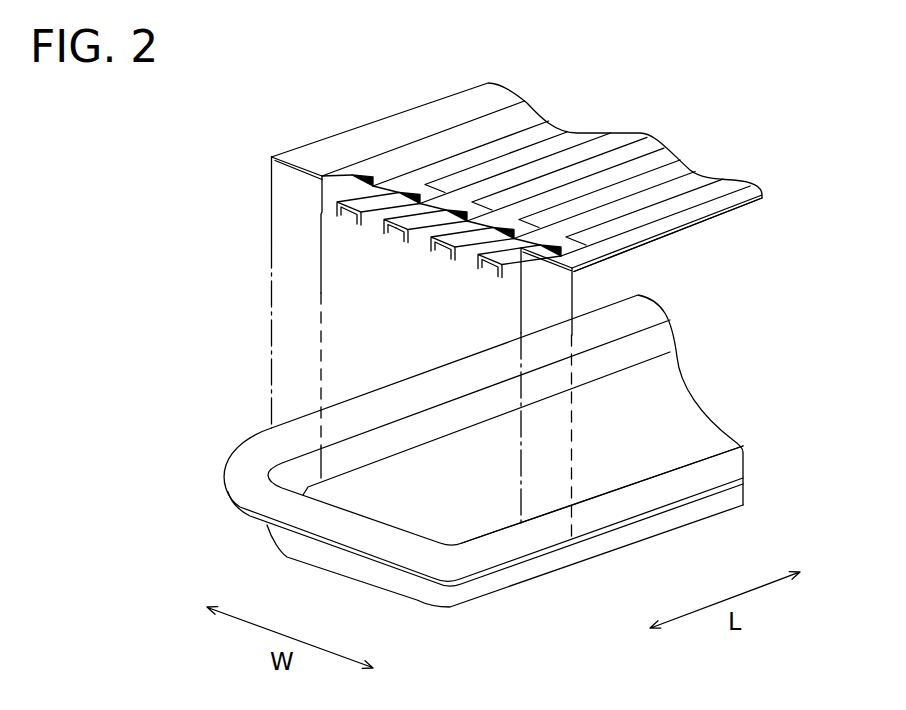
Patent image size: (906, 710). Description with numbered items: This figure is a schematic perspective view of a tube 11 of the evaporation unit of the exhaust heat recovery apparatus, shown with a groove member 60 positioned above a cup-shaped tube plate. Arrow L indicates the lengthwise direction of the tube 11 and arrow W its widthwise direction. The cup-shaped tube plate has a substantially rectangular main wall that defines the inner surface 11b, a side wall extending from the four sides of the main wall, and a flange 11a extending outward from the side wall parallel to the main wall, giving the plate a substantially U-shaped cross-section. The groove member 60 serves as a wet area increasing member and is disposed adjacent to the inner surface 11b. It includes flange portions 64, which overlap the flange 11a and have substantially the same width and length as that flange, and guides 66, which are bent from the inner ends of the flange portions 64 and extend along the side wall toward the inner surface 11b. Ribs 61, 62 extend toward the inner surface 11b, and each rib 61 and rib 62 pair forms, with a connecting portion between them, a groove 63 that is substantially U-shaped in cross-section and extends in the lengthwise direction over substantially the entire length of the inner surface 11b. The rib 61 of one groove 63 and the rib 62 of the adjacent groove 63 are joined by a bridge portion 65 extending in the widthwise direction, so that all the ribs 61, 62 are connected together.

The groove member 60 is at (388, 82).
The rib 61 is at (383, 235).
The rib 62 is at (431, 281).
The groove 63 is at (445, 267).
The flange portion 64 is at (309, 140).
The bridge portion 65 is at (378, 176).
The guide 66 is at (311, 199).
The tube 11 is at (483, 480).
The flange 11a is at (600, 513).
The inner surface 11b is at (407, 513).